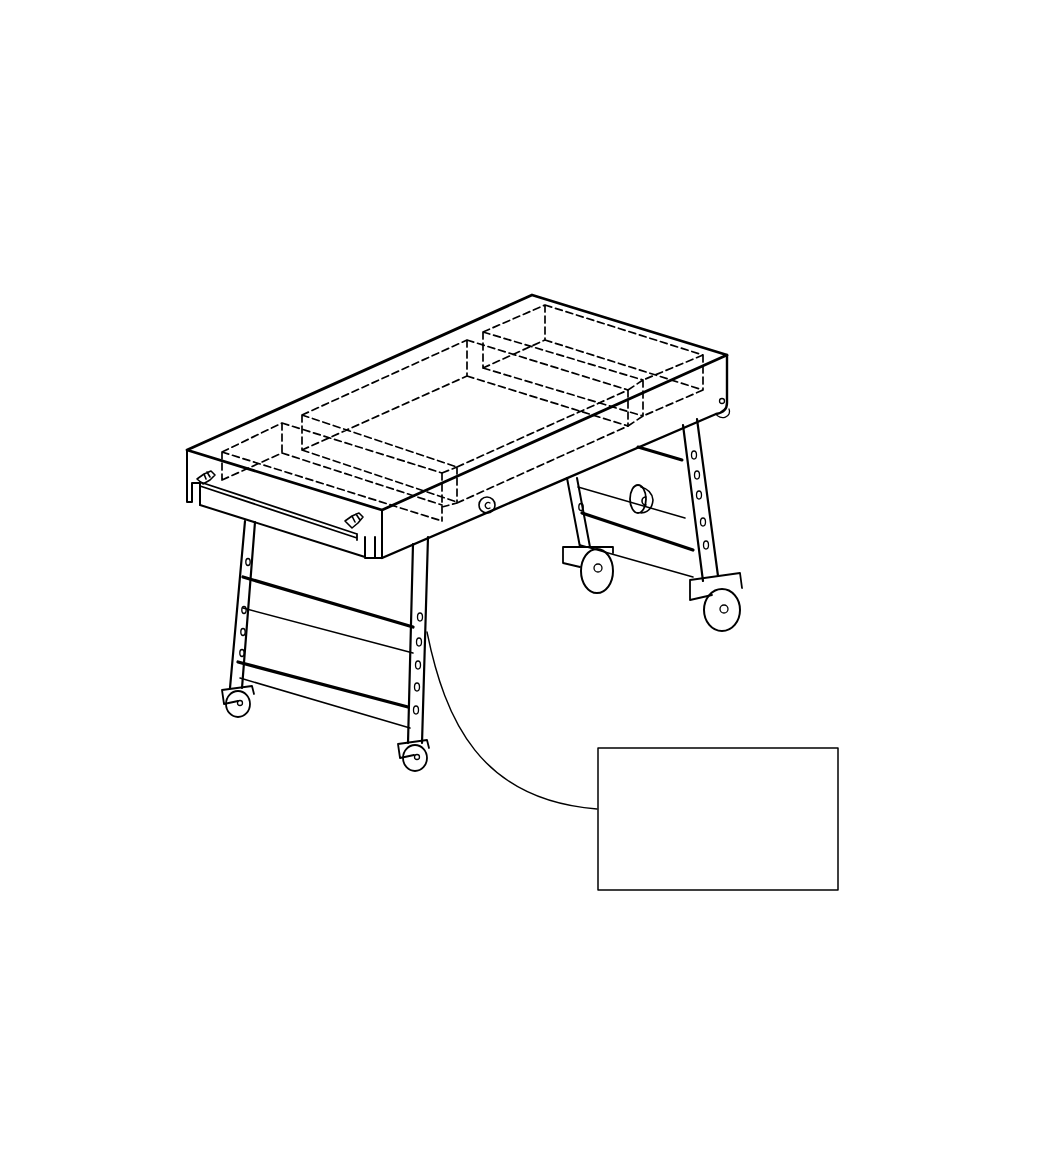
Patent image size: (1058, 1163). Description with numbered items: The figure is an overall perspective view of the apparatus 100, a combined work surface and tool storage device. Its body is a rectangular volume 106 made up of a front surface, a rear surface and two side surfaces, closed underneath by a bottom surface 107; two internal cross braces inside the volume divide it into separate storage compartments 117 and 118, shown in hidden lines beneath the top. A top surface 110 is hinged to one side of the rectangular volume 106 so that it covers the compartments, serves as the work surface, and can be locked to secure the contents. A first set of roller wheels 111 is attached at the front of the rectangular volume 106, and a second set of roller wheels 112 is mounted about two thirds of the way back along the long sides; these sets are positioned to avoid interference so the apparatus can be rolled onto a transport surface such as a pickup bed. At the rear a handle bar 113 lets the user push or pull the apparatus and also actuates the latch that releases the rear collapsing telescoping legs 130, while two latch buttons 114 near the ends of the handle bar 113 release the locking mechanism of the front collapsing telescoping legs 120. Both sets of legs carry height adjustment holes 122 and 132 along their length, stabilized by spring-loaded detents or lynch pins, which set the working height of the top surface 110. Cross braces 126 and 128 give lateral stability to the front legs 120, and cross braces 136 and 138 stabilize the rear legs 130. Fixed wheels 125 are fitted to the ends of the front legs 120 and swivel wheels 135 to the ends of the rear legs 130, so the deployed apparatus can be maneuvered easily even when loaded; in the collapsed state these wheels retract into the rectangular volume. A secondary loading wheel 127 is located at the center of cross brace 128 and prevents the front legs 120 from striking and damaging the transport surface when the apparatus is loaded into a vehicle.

The apparatus 100 is at (729, 78).
The rectangular volume 106 is at (720, 373).
The bottom surface 107 is at (415, 417).
The top surface 110 is at (440, 340).
The first set of roller wheels 111 is at (733, 393).
The second set of roller wheels 112 is at (485, 513).
The handle bar 113 is at (260, 505).
The latch buttons 114 is at (190, 455).
The storage compartment 117 is at (330, 415).
The storage compartment 118 is at (530, 330).
The front collapsing telescoping legs 120 is at (700, 468).
The height adjustment holes 122 is at (703, 507).
The fixed wheels 125 is at (730, 617).
The cross brace 126 is at (685, 560).
The secondary loading wheel 127 is at (640, 512).
The cross brace 128 is at (615, 480).
The rear collapsing telescoping legs 130 is at (410, 690).
The height adjustment holes 132 is at (425, 633).
The swivel wheels 135 is at (402, 765).
The cross brace 136 is at (298, 687).
The cross brace 138 is at (277, 608).